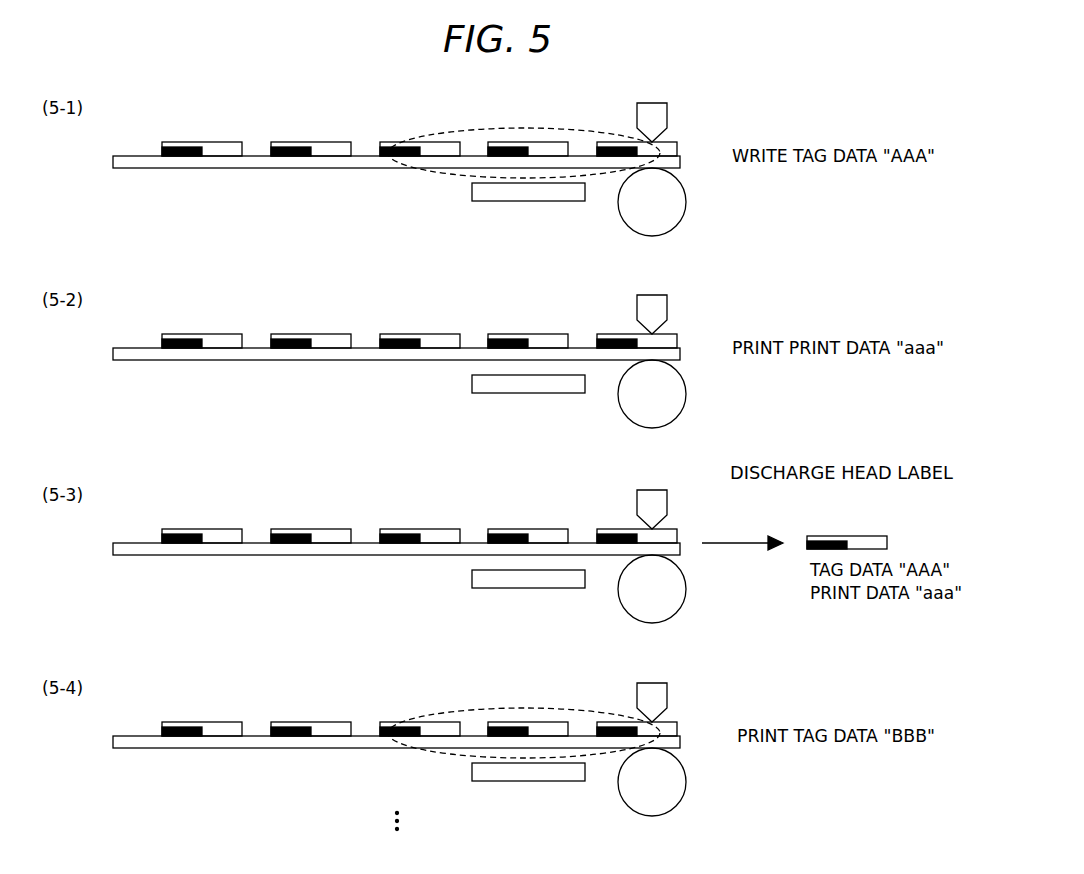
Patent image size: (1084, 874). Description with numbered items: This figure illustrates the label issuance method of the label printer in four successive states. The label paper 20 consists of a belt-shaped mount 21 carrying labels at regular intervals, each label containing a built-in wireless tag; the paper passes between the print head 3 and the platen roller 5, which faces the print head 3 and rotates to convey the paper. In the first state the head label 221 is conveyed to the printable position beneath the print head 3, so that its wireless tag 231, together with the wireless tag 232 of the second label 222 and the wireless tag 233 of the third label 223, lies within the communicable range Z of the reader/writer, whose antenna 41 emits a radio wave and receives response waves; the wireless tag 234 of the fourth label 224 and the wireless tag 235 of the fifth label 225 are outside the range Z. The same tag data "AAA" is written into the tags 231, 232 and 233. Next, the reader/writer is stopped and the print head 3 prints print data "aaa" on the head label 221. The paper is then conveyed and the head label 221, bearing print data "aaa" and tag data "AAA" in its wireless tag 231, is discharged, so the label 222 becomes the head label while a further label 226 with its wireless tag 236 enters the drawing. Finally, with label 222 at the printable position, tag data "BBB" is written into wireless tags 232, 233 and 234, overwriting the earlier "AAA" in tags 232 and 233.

The print head 3 is at (652, 103).
The platen roller 5 is at (630, 228).
The label paper 20 is at (152, 183).
The mount 21 is at (262, 168).
The antenna 41 is at (530, 201).
The head label 221 is at (677, 148).
The second label 222 is at (552, 142).
The third label 223 is at (444, 142).
The fourth label 224 is at (335, 142).
The fifth label 225 is at (226, 142).
The label (sixth) 226 is at (226, 529).
The wireless tag 231 is at (615, 142).
The wireless tag 232 is at (506, 142).
The wireless tag 233 is at (398, 142).
The wireless tag 234 is at (289, 142).
The wireless tag 235 is at (180, 142).
The RFID tag (sixth) 236 is at (180, 529).
The communicable range Z is at (442, 179).